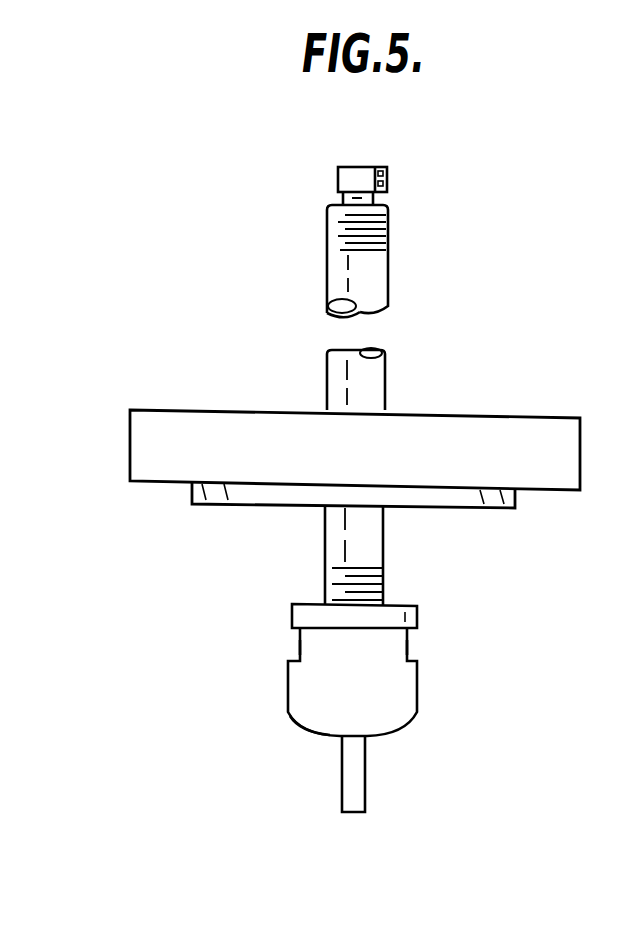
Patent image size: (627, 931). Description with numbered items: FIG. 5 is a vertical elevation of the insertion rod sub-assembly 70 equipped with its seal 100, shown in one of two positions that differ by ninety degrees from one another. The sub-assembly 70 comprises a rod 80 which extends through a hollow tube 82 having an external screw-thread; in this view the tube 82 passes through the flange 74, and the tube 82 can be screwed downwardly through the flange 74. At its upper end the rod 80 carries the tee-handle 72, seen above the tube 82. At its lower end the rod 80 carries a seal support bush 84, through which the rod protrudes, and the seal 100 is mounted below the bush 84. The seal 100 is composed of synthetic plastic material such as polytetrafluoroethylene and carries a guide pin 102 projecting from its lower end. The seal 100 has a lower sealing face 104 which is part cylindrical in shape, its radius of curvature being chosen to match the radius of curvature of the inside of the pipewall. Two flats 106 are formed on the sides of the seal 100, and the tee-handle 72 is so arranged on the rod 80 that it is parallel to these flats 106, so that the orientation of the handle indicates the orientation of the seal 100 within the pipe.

The sub-assembly 70 is at (420, 362).
The tee-handle 72 is at (355, 172).
The flange 74 is at (532, 466).
The rod 80 is at (362, 198).
The hollow tube 82 is at (338, 260).
The seal support bush 84 is at (417, 608).
The seal 100 is at (387, 709).
The guide pin 102 is at (353, 778).
The lower sealing face 104 is at (310, 732).
The flats 106 is at (285, 647).